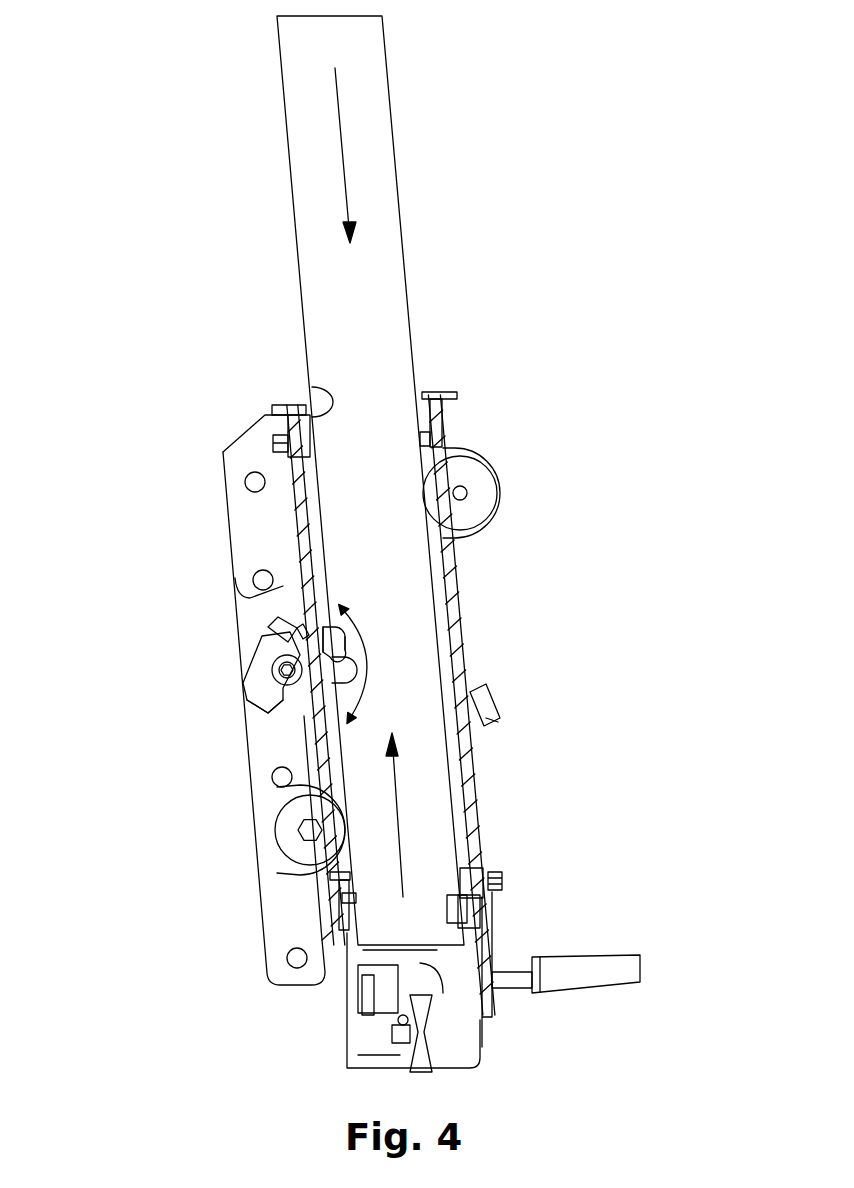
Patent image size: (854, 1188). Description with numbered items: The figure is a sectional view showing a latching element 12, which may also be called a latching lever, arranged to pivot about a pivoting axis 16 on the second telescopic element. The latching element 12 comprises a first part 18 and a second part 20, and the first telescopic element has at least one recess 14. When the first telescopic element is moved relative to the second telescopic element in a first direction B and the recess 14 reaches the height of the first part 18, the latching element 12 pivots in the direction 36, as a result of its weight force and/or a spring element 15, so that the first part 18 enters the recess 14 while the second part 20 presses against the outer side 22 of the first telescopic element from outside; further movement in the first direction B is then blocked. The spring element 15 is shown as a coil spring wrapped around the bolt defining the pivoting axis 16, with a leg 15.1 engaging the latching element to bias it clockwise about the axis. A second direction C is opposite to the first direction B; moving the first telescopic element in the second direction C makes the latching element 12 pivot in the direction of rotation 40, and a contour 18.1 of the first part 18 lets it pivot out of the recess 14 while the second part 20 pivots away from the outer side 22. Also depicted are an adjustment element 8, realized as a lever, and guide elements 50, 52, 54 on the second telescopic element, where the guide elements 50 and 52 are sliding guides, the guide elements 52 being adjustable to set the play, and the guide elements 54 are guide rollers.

The adjustment element 8 is at (483, 727).
The latching element 12 is at (190, 616).
The recess 14 is at (382, 663).
The spring element 15 is at (272, 646).
The leg 15.1 is at (285, 698).
The pivoting axis 16 is at (283, 668).
The first part 18 is at (335, 671).
The contour 18.1 is at (345, 678).
The second part 20 is at (322, 635).
The outer side 22 is at (323, 495).
The direction 36 is at (368, 682).
The direction of rotation 40 is at (363, 633).
The guide element 50 is at (428, 430).
The guide element 52 is at (308, 435).
The guide element 54 is at (485, 500).
The first direction B is at (344, 152).
The second direction C is at (400, 822).